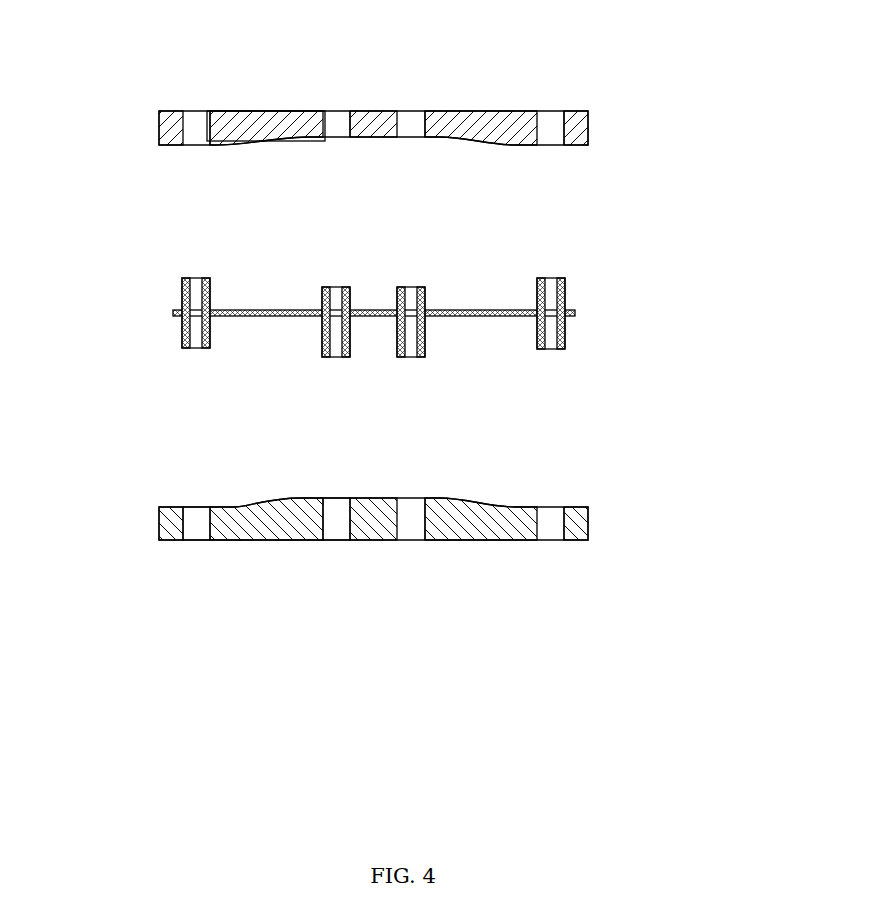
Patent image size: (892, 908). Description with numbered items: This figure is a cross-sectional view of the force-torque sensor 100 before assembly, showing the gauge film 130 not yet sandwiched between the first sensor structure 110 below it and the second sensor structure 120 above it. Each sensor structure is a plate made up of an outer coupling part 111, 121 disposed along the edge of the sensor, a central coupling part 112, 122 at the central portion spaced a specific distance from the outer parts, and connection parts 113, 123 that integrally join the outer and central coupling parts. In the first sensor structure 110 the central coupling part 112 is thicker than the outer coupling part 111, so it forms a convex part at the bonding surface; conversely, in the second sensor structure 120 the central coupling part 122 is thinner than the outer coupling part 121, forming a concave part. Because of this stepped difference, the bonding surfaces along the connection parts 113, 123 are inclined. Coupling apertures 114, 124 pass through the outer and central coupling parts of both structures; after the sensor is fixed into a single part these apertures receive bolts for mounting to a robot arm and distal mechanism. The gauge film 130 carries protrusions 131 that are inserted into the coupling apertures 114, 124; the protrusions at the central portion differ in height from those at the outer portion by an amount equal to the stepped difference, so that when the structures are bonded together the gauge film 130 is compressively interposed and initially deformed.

The force-torque sensor 100 is at (636, 324).
The first sensor structure 110 is at (362, 506).
The outer coupling part 111 is at (158, 522).
The central coupling part 112 is at (372, 498).
The connection part 113 is at (263, 500).
The coupling aperture 114 is at (200, 532).
The second sensor structure 120 is at (416, 123).
The outer coupling part 121 is at (159, 146).
The central coupling part 122 is at (370, 138).
The connection part 123 is at (274, 146).
The coupling aperture 124 is at (205, 119).
The gauge film 130 is at (312, 345).
The protrusion 131 is at (322, 342).